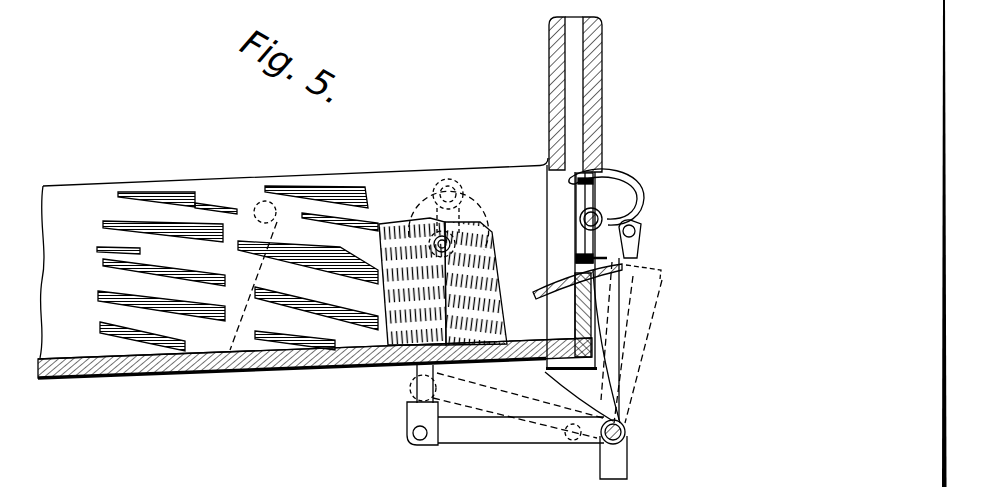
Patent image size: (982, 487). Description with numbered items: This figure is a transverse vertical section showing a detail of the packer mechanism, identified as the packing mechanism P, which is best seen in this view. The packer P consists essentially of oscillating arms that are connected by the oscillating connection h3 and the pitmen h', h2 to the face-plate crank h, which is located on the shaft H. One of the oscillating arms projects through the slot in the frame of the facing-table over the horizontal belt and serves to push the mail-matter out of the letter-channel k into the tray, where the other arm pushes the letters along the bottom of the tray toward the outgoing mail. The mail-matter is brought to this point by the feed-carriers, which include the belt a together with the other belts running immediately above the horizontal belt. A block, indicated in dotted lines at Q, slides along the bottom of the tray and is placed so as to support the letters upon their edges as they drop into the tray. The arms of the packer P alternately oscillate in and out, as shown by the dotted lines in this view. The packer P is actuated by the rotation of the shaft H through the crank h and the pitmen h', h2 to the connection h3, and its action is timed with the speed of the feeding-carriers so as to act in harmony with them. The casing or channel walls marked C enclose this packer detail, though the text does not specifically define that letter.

The casing channel C is at (597, 176).
The block Q is at (425, 215).
The letter-channel k is at (575, 102).
The belt a is at (443, 279).
The shaft H is at (452, 222).
The face-plate crank h is at (587, 222).
The packing mechanism P is at (622, 207).
The pitman h' is at (529, 291).
The pitman h2 is at (637, 261).
The oscillating connection h3 is at (487, 403).